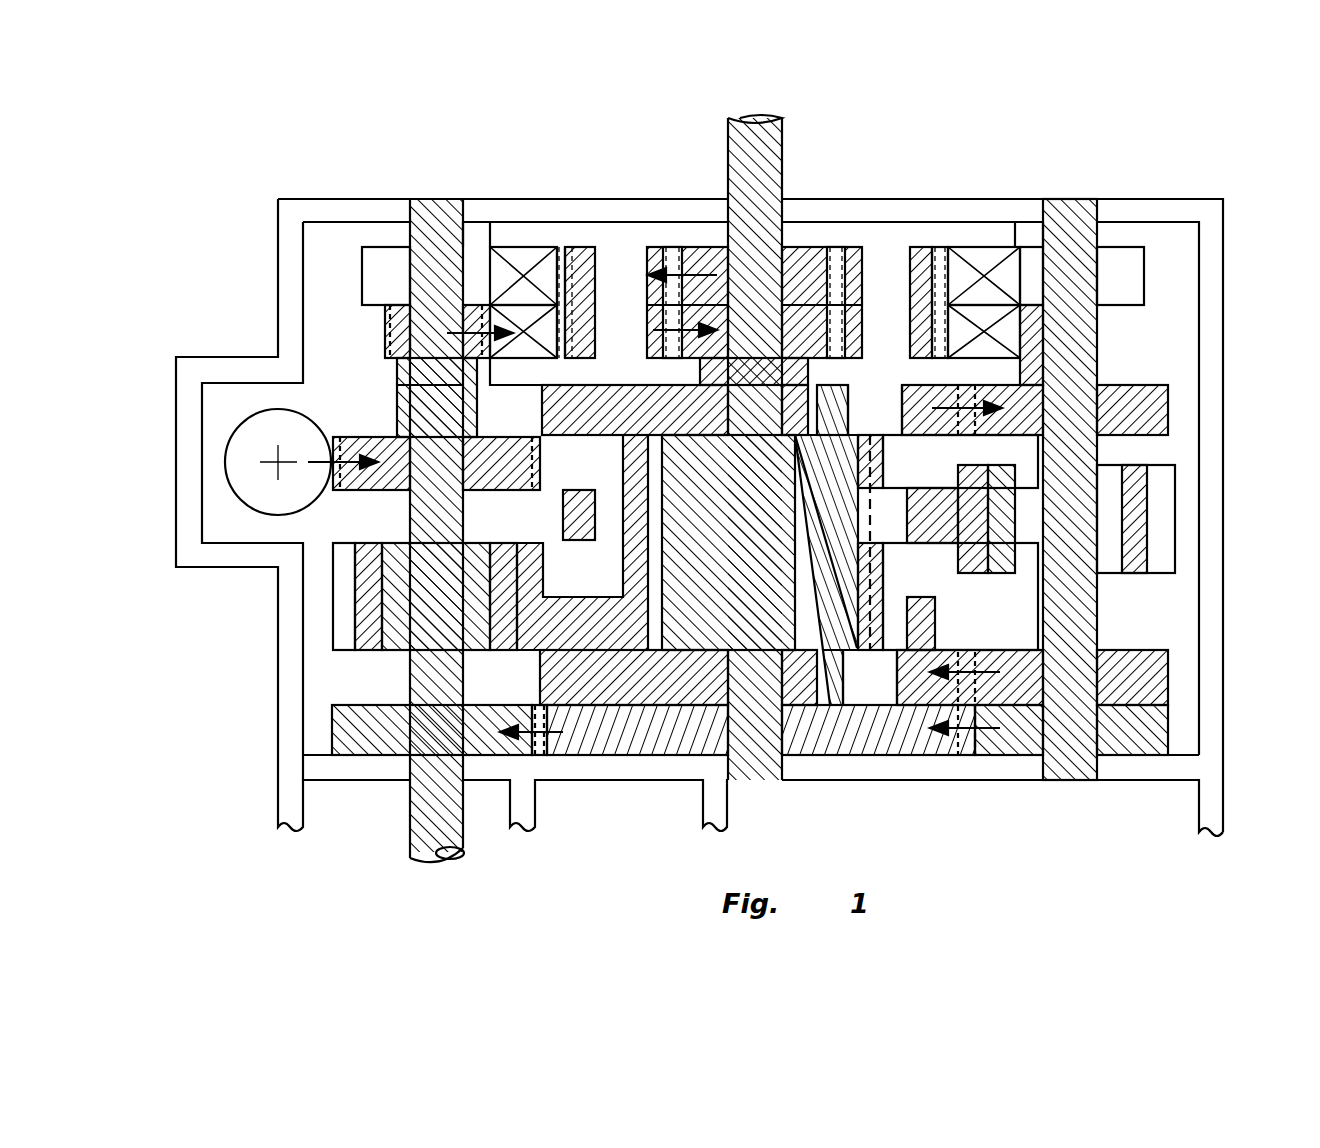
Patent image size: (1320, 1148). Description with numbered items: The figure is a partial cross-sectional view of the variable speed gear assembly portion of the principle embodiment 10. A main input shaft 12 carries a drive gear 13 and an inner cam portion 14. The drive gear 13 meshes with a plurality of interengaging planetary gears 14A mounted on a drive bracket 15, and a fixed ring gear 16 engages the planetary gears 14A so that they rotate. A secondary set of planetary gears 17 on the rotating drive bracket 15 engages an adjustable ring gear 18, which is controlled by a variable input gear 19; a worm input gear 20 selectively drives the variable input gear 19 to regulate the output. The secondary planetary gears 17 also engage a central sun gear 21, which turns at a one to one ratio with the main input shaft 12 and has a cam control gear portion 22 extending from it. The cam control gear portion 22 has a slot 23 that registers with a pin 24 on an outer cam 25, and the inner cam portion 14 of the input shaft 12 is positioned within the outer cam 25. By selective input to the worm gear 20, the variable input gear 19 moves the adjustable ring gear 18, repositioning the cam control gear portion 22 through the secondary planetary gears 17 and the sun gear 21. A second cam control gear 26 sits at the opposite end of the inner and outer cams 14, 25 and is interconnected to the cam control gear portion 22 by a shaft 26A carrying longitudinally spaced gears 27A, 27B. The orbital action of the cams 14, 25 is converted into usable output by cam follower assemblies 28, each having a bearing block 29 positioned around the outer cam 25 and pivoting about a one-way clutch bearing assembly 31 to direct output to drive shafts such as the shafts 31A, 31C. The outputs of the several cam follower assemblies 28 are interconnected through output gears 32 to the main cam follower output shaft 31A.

The principle embodiment 10 is at (1128, 152).
The main input shaft 12 is at (780, 155).
The drive gear 13 is at (808, 262).
The inner cam portion 14 is at (757, 523).
The planetary gears 14A is at (583, 270).
The drive bracket 15 is at (518, 237).
The fixed ring gear 16 is at (1122, 290).
The secondary set of planetary gears 17 is at (917, 330).
The adjustable ring gear 18 is at (1007, 343).
The variable input gear 19 is at (402, 330).
The worm input gear 20 is at (230, 506).
The central sun gear 21 is at (677, 312).
The cam control gear portion 22 is at (575, 415).
The slot 23 is at (870, 415).
The pin 24 is at (834, 437).
The outer cam 25 is at (825, 620).
The second cam control gear 26 is at (620, 665).
The shaft 26A is at (1075, 618).
The longitudinally spaced gear 27A is at (1150, 415).
The longitudinally spaced gear 27B is at (1150, 678).
The cam follower assemblies 28 is at (1188, 518).
The bearing block 29 is at (627, 460).
The one-way clutch bearing assembly 31 is at (375, 603).
The main cam follower output shaft 31A is at (433, 813).
The drive shaft 31C is at (1073, 782).
The output gears 32 is at (687, 737).